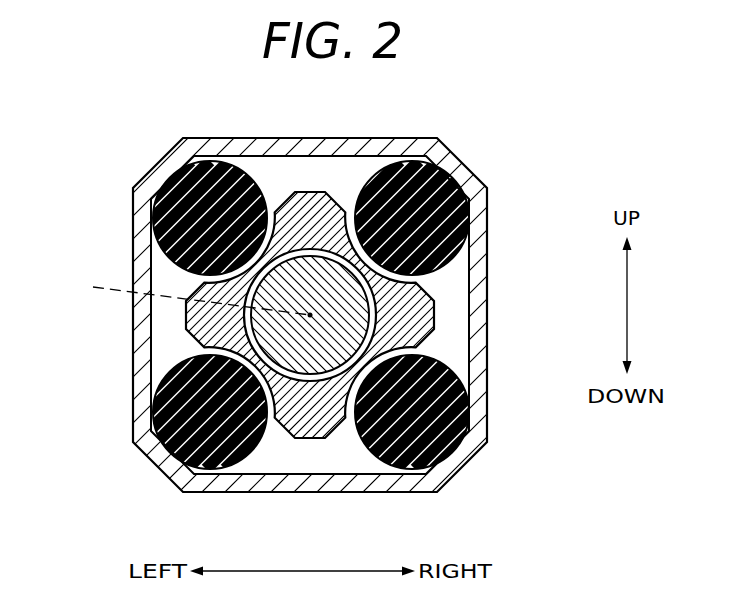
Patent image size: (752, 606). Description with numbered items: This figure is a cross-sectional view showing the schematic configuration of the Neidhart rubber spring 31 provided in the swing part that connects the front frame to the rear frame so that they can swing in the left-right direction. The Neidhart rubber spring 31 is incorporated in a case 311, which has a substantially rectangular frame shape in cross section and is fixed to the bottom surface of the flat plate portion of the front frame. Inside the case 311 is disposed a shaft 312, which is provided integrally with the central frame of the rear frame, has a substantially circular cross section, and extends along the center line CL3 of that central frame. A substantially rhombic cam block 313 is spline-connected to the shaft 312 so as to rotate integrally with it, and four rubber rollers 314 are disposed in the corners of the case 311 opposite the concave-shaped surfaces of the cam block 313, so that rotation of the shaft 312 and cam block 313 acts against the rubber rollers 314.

The Neidhart rubber spring 31 is at (460, 305).
The case 311 is at (489, 409).
The shaft 312 is at (321, 380).
The cam block 313 is at (340, 207).
The rubber rollers 314 is at (160, 246).
The center line CL3 is at (180, 297).